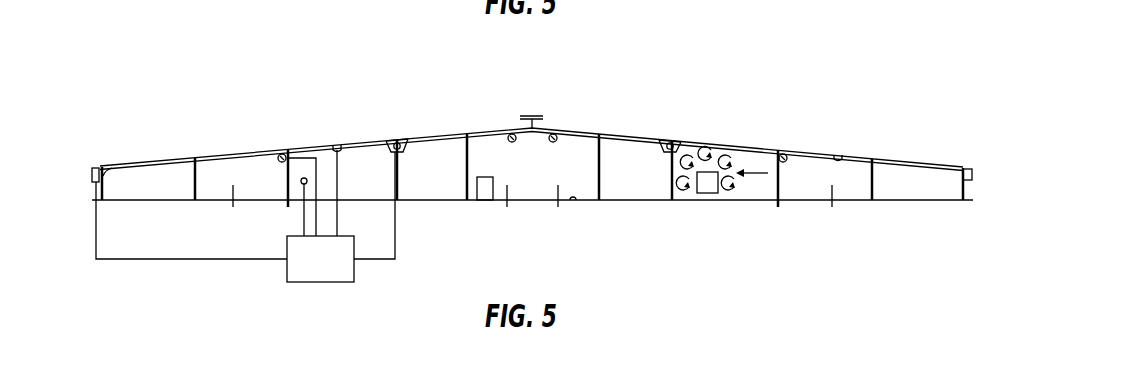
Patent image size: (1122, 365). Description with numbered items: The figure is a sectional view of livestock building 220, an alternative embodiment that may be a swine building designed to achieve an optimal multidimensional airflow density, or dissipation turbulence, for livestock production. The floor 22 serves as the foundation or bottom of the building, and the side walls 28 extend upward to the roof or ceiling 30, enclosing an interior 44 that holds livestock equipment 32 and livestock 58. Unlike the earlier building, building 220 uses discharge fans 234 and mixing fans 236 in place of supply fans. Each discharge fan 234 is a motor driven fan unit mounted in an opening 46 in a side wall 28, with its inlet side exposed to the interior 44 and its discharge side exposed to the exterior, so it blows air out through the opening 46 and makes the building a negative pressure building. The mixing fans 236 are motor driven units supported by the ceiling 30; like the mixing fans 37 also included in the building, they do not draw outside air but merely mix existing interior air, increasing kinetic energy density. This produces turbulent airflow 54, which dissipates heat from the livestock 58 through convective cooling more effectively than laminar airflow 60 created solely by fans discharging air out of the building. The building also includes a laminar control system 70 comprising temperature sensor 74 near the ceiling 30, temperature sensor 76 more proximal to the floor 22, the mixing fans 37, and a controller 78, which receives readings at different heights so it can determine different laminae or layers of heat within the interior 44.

The livestock building 220 is at (176, 70).
The floor 22 is at (575, 202).
The side walls 28 is at (97, 168).
The roof or ceiling 30 is at (839, 154).
The livestock equipment 32 is at (493, 186).
The mixing fans 37 is at (281, 155).
The interior 44 is at (616, 145).
The openings 46 is at (113, 166).
The turbulent airflow 54 is at (685, 192).
The livestock 58 is at (718, 194).
The laminar airflow 60 is at (755, 176).
The laminar control system 70 is at (303, 293).
The temperature sensor 74 is at (337, 144).
The temperature sensor 76 is at (300, 181).
The controller 78 is at (348, 283).
The discharge fans 234 is at (968, 166).
The mixing fans 236 is at (404, 150).